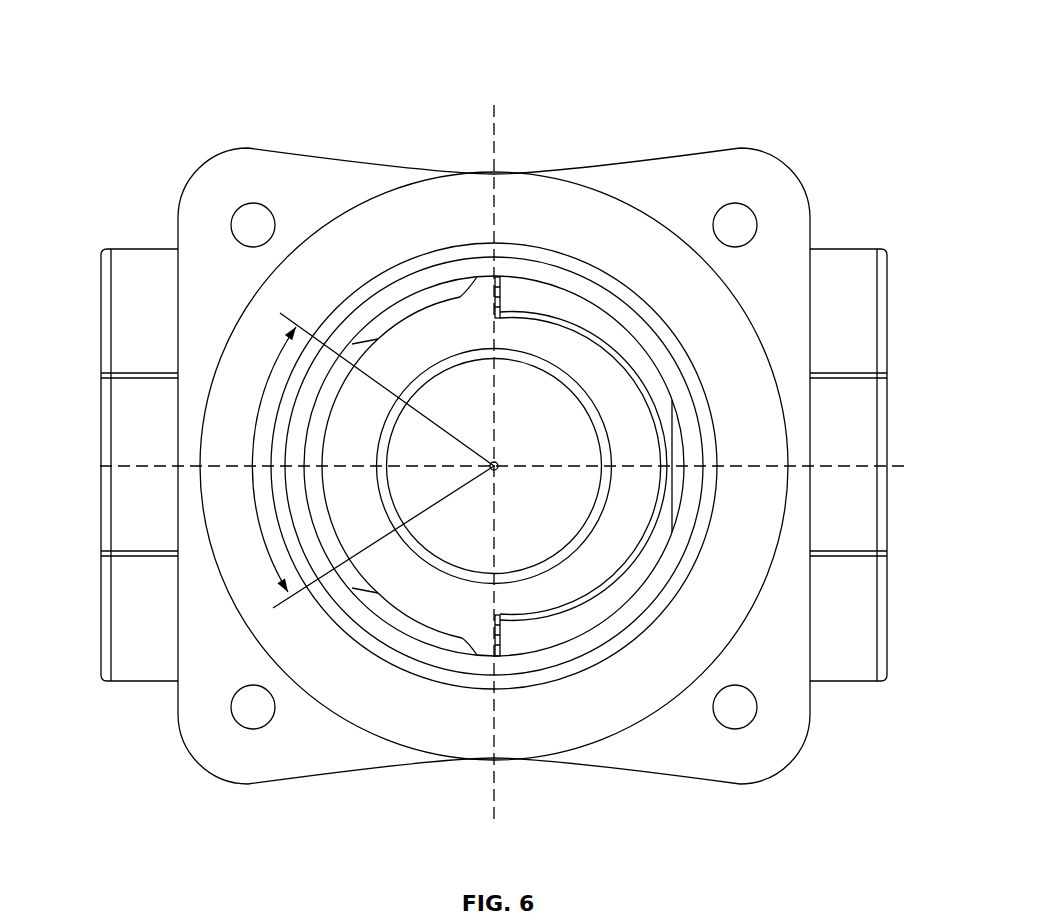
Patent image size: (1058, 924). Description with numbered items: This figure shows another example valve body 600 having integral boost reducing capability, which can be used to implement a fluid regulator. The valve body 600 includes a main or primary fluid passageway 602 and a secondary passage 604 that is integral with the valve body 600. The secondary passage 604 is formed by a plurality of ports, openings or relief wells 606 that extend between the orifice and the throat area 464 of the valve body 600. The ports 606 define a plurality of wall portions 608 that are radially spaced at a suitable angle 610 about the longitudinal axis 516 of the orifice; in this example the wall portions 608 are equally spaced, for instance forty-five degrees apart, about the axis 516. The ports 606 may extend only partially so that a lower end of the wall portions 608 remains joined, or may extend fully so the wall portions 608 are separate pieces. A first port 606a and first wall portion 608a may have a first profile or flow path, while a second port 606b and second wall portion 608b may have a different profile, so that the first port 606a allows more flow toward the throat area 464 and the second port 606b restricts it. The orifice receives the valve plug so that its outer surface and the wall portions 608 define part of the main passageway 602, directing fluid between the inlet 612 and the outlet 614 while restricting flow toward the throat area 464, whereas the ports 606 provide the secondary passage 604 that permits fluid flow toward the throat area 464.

The valve body 600 is at (768, 59).
The throat area 464 is at (578, 283).
The main fluid passageway 602 is at (486, 403).
The longitudinal axis 516 is at (503, 460).
The secondary passage 604 is at (485, 268).
The ports 606 is at (407, 407).
The first port 606a is at (360, 343).
The second port 606b is at (352, 588).
The wall portions 608 is at (355, 421).
The first wall portion 608a is at (417, 310).
The second wall portion 608b is at (398, 627).
The angle 610 is at (274, 570).
The inlet 612 is at (112, 406).
The outlet 614 is at (876, 406).